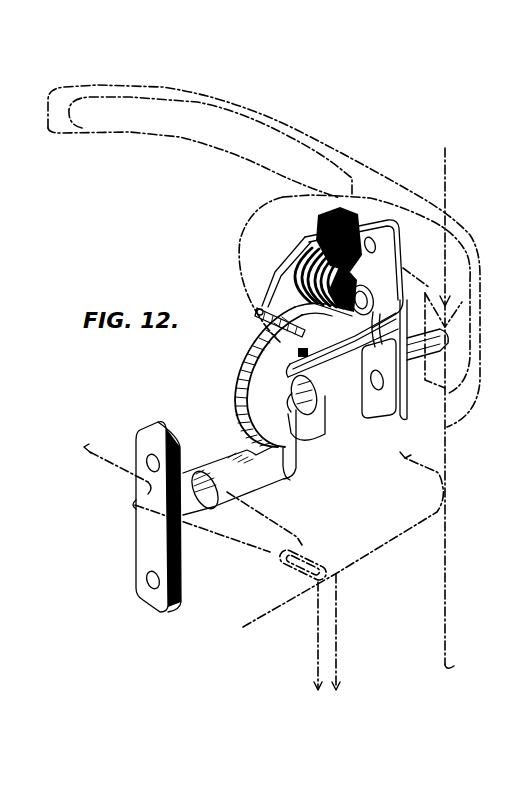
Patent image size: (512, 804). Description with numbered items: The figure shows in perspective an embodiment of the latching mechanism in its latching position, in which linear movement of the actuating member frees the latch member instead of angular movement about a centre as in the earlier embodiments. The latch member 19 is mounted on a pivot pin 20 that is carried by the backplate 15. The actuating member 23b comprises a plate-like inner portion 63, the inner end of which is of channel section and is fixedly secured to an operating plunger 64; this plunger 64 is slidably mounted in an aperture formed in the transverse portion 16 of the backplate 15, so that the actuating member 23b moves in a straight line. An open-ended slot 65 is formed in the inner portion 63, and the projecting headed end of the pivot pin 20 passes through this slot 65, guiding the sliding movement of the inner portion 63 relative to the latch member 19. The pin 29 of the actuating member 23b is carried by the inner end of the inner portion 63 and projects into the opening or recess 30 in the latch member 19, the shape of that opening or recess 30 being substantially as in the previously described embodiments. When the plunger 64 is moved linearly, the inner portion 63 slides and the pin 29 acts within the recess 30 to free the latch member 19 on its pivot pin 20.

The backplate 15 is at (322, 236).
The transverse portion of the backplate 16 is at (363, 232).
The latch member 19 is at (268, 383).
The pivot pin 20 is at (288, 398).
The actuating member 23b is at (303, 340).
The pin of the actuating member 29 is at (378, 418).
The opening or recess 30 is at (285, 356).
The plate-like inner portion 63 is at (318, 410).
The operating plunger 64 is at (442, 408).
The open-ended slot 65 is at (331, 398).